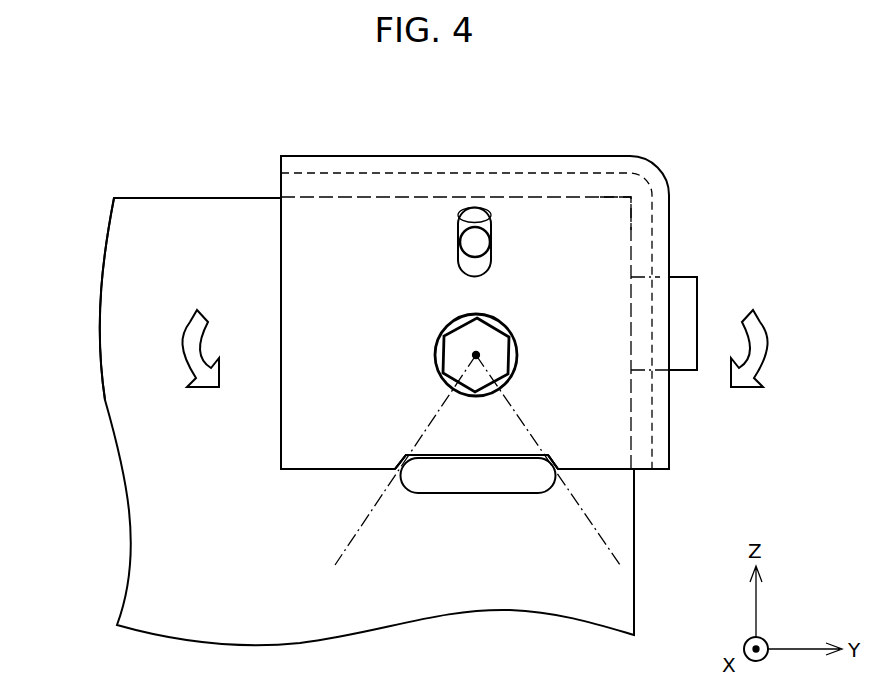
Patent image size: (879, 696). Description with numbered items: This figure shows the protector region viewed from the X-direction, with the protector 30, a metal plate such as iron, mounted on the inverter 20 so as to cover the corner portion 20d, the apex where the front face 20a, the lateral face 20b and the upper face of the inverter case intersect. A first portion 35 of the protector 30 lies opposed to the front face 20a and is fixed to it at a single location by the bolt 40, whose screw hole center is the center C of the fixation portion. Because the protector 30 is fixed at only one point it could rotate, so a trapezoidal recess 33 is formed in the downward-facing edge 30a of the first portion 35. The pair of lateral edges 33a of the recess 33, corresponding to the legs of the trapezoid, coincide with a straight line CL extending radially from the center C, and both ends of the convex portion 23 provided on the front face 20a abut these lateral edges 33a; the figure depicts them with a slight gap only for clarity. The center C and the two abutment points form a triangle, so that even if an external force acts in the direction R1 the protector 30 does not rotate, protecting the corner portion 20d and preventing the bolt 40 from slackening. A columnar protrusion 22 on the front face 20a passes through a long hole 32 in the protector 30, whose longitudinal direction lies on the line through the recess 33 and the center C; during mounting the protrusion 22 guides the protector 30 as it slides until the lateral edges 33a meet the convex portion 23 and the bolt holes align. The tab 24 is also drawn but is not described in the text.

The inverter 20 is at (112, 197).
The front face 20a is at (108, 246).
The lateral face 20b is at (635, 580).
The corner portion 20d is at (632, 197).
The columnar protrusion 22 is at (483, 242).
The convex portion 23 is at (484, 490).
The protruding tab 24 is at (685, 288).
The protector 30 is at (662, 177).
The edge 30a is at (598, 471).
The long hole 32 is at (475, 208).
The trapezoidal recess 33 is at (398, 472).
The lateral edges 33a is at (404, 456).
The first portion 35 is at (352, 250).
The bolt 40 is at (470, 330).
The center of the fixation portion C is at (480, 356).
The straight line CL is at (366, 518).
The direction of external force R1 is at (479, 348).